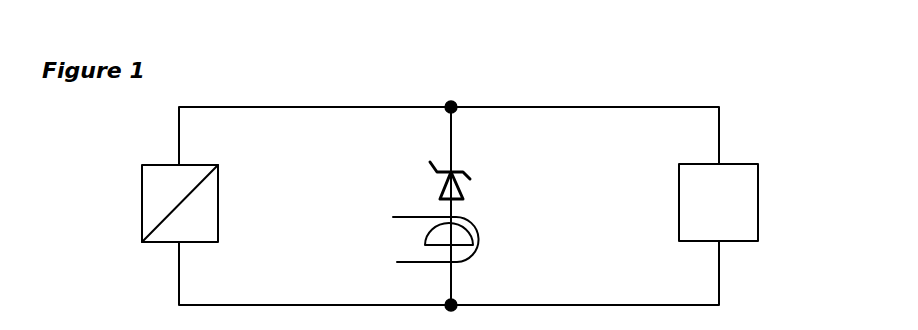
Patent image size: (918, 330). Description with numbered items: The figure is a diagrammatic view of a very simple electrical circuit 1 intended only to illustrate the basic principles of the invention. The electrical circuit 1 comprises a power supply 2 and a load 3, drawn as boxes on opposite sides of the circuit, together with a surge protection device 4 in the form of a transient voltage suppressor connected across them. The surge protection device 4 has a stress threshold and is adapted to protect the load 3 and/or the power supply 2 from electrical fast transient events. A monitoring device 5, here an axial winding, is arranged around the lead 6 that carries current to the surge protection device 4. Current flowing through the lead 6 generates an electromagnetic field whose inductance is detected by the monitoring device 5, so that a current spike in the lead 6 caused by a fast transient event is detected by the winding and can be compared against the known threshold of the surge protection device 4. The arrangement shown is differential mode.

The electrical circuit 1 is at (338, 73).
The power supply 2 is at (142, 165).
The load 3 is at (758, 164).
The surge protection device 4 is at (447, 188).
The monitoring device 5 is at (476, 222).
The lead 6 is at (453, 288).